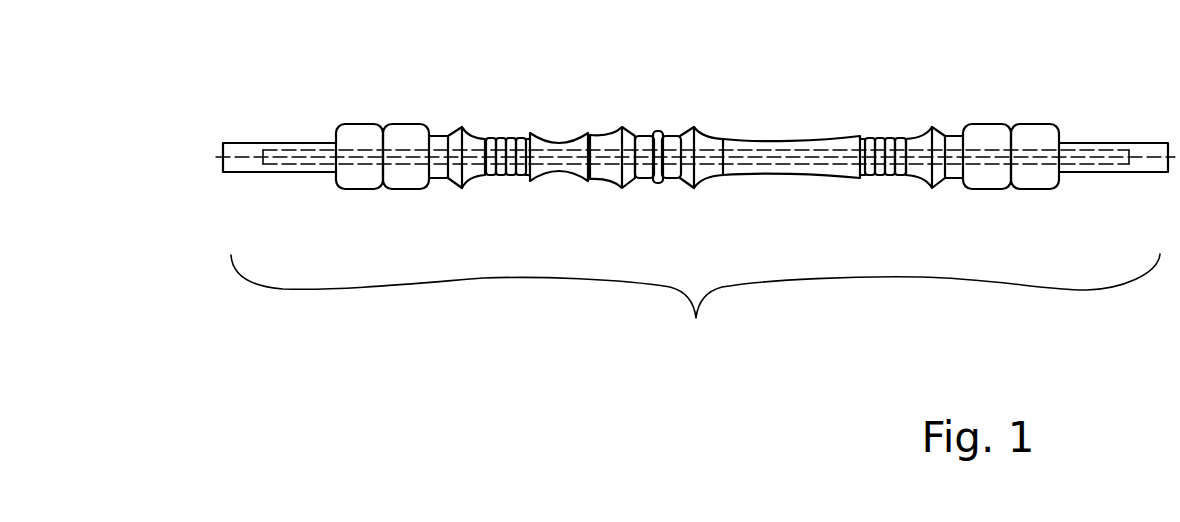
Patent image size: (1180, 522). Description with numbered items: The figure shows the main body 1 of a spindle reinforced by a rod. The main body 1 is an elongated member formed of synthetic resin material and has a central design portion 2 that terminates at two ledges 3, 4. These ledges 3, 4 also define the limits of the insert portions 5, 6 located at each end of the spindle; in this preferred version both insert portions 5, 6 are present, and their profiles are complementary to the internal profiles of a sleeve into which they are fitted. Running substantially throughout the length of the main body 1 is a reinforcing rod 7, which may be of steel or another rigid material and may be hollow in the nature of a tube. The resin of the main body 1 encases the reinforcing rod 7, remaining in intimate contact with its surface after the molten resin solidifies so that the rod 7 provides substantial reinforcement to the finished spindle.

The main body 1 is at (695, 209).
The central design portion 2 is at (502, 138).
The ledge 3 is at (1060, 137).
The ledge 4 is at (337, 139).
The insert portion 5 is at (1155, 163).
The insert portion 6 is at (238, 163).
The reinforcing rod 7 is at (355, 163).